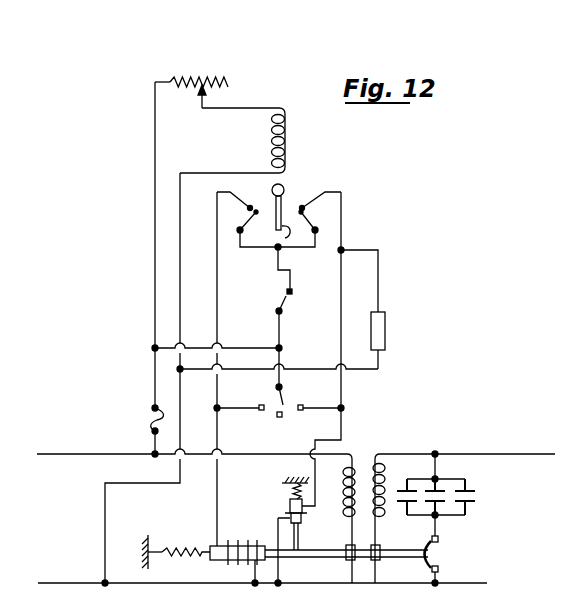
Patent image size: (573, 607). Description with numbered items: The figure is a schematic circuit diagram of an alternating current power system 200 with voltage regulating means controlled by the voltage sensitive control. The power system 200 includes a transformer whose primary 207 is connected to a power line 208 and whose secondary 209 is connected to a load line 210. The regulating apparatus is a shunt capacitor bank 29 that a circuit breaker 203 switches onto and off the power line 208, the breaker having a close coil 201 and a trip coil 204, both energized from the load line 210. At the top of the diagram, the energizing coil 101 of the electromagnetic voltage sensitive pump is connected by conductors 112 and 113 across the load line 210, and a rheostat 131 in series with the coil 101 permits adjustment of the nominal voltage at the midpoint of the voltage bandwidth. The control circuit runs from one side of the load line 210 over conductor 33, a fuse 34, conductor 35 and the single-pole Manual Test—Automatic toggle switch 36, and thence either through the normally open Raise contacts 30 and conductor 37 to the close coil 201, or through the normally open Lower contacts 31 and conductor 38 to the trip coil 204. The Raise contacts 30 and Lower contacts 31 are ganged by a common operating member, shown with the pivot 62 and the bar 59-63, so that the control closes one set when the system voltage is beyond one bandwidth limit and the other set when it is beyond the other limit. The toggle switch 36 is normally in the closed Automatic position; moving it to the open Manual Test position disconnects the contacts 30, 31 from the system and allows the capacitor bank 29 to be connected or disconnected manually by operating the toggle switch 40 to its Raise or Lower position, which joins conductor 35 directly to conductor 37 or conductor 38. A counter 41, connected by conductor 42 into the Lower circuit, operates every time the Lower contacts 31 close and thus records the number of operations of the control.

The rheostat 131 is at (186, 79).
The energizing coil 101 is at (287, 134).
The conductor 112 is at (155, 269).
The conductor 113 is at (180, 272).
The pivot 62 is at (283, 186).
The switch operating bar 59-63 is at (267, 221).
The Raise electrical contacts 30 is at (240, 222).
The Lower contacts 31 is at (334, 222).
The conductor 42 is at (378, 273).
The counter 41 is at (386, 329).
The Manual Test—Automatic toggle switch 36 is at (285, 302).
The conductor 35 is at (244, 348).
The toggle switch 40 is at (285, 403).
The conductor 37 is at (217, 433).
The conductor 38 is at (343, 435).
The fuse 34 is at (152, 410).
The conductor 33 is at (152, 436).
The load line 210 is at (55, 454).
The power line 208 is at (470, 444).
The alternating current power system 200 is at (359, 471).
The secondary 209 is at (344, 502).
The primary 207 is at (386, 519).
The shunt capacitor bank 29 is at (470, 509).
The circuit breaker 203 is at (335, 579).
The trip coil 204 is at (303, 527).
The close coil 201 is at (237, 546).